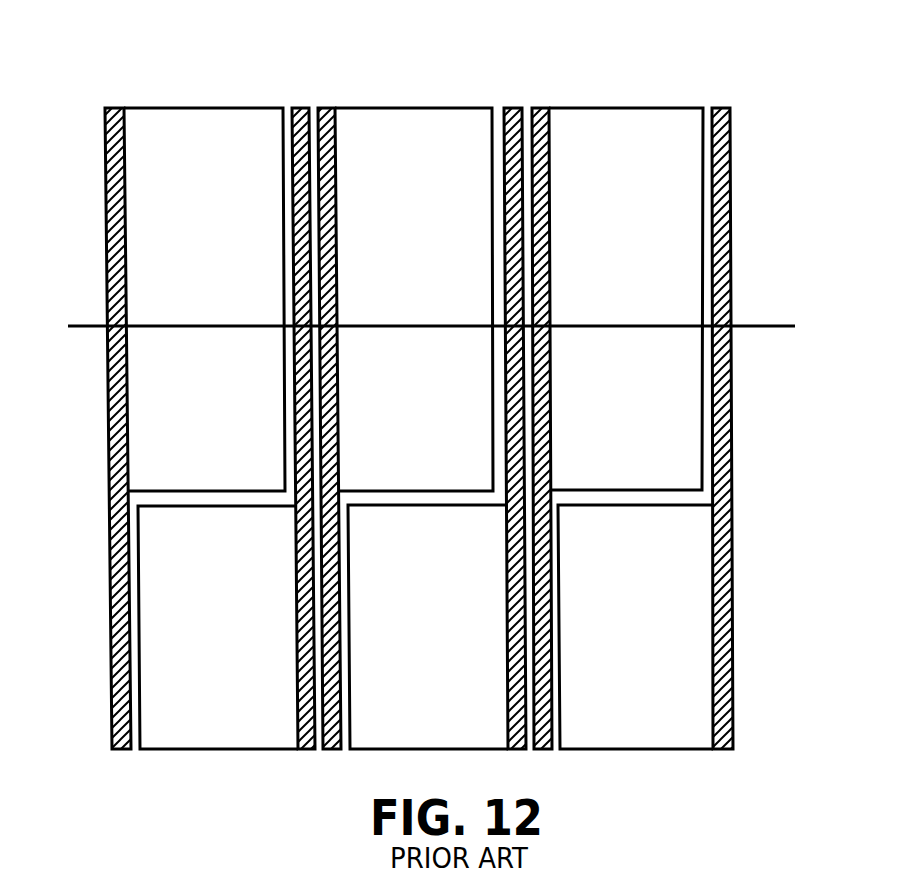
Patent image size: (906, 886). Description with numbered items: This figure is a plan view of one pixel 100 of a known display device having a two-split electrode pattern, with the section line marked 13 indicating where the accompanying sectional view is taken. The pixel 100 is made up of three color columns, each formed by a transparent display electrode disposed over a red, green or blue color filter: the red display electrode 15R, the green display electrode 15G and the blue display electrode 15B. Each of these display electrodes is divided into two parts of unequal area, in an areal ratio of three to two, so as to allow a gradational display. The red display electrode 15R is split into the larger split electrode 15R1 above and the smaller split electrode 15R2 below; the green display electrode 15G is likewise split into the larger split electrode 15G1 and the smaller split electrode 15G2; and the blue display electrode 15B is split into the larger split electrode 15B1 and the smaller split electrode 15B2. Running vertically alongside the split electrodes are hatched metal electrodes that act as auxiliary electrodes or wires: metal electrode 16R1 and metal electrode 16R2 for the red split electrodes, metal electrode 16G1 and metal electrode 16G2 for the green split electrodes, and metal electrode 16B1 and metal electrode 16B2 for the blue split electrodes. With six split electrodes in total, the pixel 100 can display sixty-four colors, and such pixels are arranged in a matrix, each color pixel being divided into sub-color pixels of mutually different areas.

The pixel 100 is at (749, 112).
The blue filter 13 is at (432, 327).
The red display electrode 15R is at (211, 377).
The larger red split electrode 15R1 is at (204, 299).
The smaller red split electrode 15R2 is at (218, 627).
The green display electrode 15G is at (421, 377).
The larger green split electrode 15G1 is at (414, 299).
The smaller green split electrode 15G2 is at (428, 627).
The blue display electrode 15B is at (631, 377).
The larger blue split electrode 15B1 is at (626, 299).
The smaller blue split electrode 15B2 is at (635, 627).
The metal electrode for larger red split electrode 16R1 is at (113, 107).
The metal electrode for smaller red split electrode 16R2 is at (300, 107).
The metal electrode for larger green split electrode 16G1 is at (327, 107).
The metal electrode for smaller green split electrode 16G2 is at (512, 107).
The metal electrode for larger blue split electrode 16B1 is at (540, 107).
The metal electrode for smaller blue split electrode 16B2 is at (721, 107).